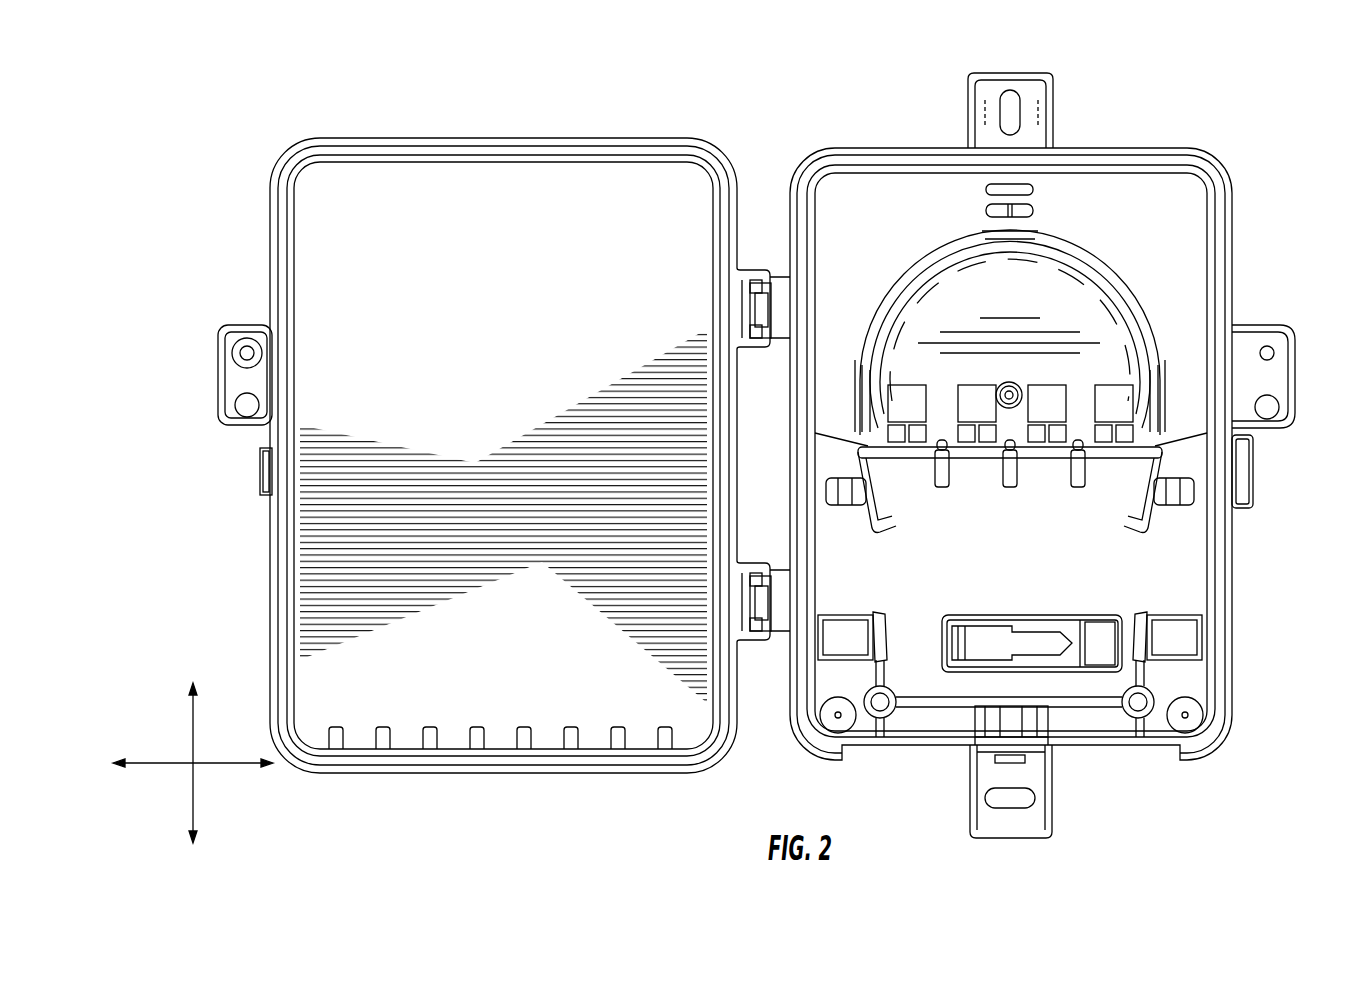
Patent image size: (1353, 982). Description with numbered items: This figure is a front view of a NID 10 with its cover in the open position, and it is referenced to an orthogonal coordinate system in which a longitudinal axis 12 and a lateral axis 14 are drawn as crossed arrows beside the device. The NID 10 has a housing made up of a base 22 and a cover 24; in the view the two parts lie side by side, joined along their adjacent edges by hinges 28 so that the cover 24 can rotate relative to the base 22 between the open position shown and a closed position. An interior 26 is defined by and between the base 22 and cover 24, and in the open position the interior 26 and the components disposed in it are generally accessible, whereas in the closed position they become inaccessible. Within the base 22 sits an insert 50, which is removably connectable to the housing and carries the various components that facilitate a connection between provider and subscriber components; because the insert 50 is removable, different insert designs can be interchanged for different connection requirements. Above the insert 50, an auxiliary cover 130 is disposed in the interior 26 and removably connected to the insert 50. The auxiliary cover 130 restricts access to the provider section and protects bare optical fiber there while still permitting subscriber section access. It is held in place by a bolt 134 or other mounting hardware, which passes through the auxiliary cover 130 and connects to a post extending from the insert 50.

The NID 10 is at (808, 112).
The longitudinal axis 12 is at (193, 746).
The lateral axis 14 is at (217, 765).
The base 22 is at (513, 120).
The cover 24 is at (1158, 120).
The interior 26 is at (870, 590).
The hinge 28 is at (766, 246).
The insert 50 is at (1182, 537).
The auxiliary cover 130 is at (1168, 226).
The bolt 134 is at (1020, 382).